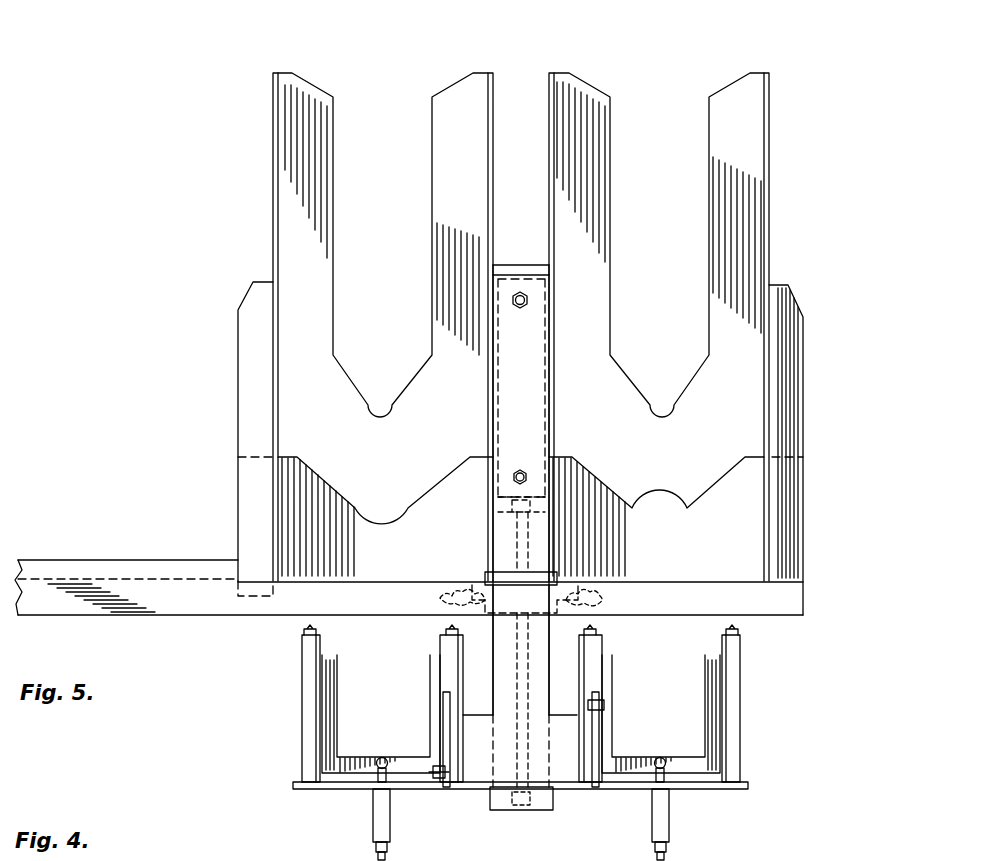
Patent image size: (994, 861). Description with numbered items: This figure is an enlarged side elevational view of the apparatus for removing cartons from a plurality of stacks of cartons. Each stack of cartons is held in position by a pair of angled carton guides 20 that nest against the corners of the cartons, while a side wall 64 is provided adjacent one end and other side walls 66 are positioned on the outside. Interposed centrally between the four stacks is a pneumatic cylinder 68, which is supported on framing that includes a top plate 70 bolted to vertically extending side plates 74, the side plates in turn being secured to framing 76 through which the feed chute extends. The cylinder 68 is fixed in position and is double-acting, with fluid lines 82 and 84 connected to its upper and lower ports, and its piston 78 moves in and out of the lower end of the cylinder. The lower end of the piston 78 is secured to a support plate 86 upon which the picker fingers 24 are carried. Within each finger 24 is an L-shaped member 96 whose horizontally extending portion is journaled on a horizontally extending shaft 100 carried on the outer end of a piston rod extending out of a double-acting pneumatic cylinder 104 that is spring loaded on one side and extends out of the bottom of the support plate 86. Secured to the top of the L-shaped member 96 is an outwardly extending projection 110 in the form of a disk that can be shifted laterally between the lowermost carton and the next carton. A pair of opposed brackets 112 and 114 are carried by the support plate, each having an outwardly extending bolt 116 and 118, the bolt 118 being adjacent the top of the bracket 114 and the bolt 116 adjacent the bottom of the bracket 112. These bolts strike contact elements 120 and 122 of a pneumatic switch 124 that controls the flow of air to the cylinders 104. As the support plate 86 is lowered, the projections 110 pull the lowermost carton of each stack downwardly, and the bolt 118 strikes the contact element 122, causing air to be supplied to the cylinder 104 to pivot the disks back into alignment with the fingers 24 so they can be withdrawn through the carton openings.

The angled carton guides 20 is at (440, 125).
The picker fingers 24 is at (306, 690).
The side wall 64 is at (305, 478).
The side walls 66 is at (238, 326).
The pneumatic cylinder 68 is at (553, 390).
The top plate 70 is at (506, 270).
The side plates 74 is at (548, 682).
The framing 76 is at (792, 610).
The piston 78 is at (548, 534).
The fluid line 82 is at (532, 300).
The fluid line 84 is at (512, 477).
The support plate 86 is at (722, 790).
The L-shaped member 96 is at (430, 757).
The shaft 100 is at (378, 770).
The pneumatic cylinder 104 is at (374, 822).
The projection 110 is at (450, 630).
The bracket 112 is at (450, 750).
The bracket 114 is at (590, 772).
The bolt 116 is at (438, 780).
The bolt 118 is at (603, 706).
The contact element 120 is at (460, 598).
The contact element 122 is at (606, 598).
The pneumatic switch 124 is at (511, 578).